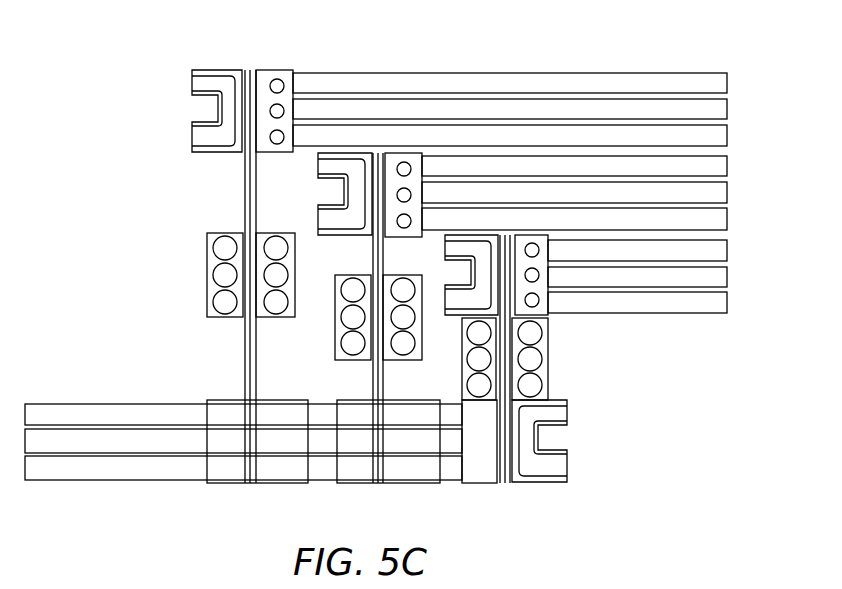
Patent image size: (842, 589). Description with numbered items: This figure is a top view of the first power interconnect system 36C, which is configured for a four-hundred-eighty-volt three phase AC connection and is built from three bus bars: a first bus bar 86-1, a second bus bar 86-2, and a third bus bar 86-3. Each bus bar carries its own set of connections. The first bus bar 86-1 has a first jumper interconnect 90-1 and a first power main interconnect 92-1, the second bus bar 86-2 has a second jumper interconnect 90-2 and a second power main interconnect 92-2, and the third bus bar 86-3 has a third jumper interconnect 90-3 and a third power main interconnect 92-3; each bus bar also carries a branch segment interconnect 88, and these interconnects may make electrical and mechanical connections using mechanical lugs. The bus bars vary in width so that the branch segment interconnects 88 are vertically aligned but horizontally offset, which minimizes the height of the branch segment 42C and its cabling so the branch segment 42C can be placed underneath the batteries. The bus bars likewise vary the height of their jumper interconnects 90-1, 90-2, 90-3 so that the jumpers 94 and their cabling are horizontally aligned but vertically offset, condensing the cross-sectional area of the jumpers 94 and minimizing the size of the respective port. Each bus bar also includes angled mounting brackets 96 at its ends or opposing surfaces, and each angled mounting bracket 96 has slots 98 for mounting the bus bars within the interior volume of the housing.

The first power interconnect system 36C is at (100, 103).
The branch segment 42C is at (668, 167).
The first bus bar 86-1 is at (507, 235).
The second bus bar 86-2 is at (384, 152).
The third bus bar 86-3 is at (251, 72).
The branch segment interconnect 88 is at (283, 72).
The first jumper interconnect 90-1 is at (485, 483).
The second jumper interconnect 90-2 is at (345, 483).
The third jumper interconnect 90-3 is at (230, 483).
The first power main interconnect 92-1 is at (548, 360).
The second power main interconnect 92-2 is at (335, 350).
The third power main interconnect 92-3 is at (207, 263).
The jumpers 94 is at (125, 440).
The angled mounting bracket 96 is at (215, 70).
The slots 98 is at (570, 457).